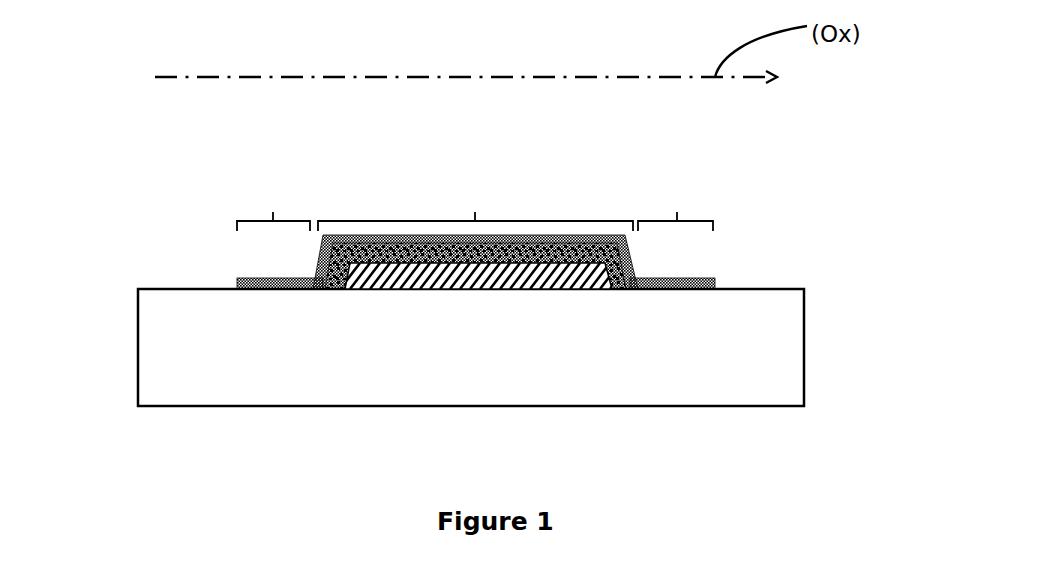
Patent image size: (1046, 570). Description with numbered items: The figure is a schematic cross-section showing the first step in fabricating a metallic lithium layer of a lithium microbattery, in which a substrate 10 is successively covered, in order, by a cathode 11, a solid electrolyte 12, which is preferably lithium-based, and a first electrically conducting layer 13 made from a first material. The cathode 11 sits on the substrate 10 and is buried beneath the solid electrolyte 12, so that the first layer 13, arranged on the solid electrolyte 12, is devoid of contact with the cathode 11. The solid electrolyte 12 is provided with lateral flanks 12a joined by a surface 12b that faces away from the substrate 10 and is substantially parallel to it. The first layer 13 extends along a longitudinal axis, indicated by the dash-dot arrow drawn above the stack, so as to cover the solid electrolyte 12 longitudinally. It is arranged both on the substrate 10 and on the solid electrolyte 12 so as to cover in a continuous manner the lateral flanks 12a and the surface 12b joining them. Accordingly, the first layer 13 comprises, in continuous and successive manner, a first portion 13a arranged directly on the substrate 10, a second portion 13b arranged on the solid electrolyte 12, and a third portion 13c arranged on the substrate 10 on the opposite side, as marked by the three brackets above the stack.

The substrate 10 is at (357, 393).
The cathode 11 is at (508, 268).
The solid electrolyte 12 is at (583, 243).
The lateral flanks 12a is at (317, 270).
The surface 12b is at (355, 243).
The first electrically conducting layer 13 is at (737, 282).
The first portion 13a is at (273, 208).
The second portion 13b is at (475, 204).
The third portion 13c is at (675, 204).